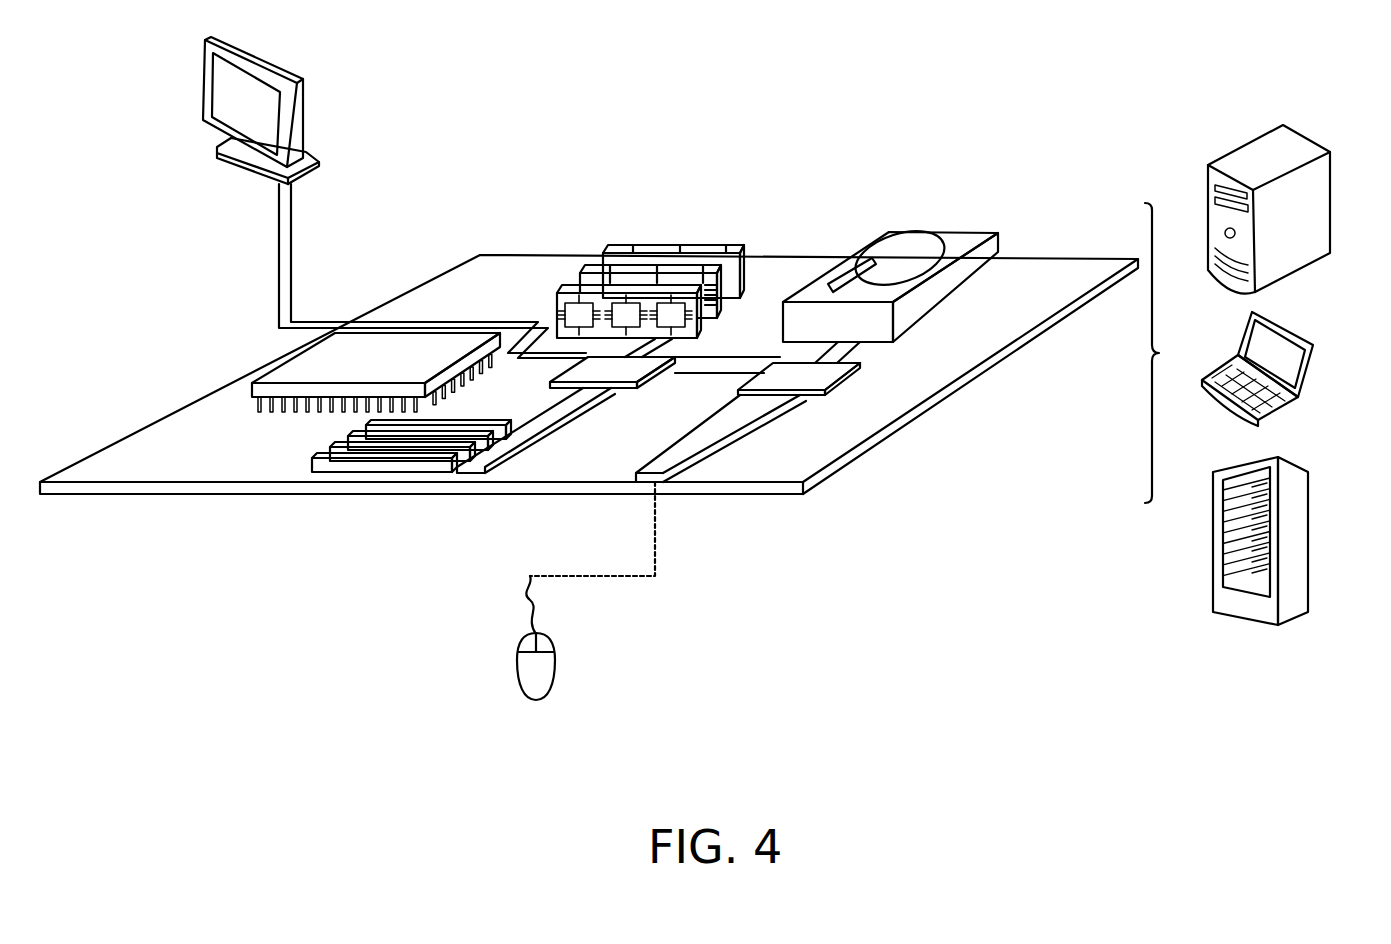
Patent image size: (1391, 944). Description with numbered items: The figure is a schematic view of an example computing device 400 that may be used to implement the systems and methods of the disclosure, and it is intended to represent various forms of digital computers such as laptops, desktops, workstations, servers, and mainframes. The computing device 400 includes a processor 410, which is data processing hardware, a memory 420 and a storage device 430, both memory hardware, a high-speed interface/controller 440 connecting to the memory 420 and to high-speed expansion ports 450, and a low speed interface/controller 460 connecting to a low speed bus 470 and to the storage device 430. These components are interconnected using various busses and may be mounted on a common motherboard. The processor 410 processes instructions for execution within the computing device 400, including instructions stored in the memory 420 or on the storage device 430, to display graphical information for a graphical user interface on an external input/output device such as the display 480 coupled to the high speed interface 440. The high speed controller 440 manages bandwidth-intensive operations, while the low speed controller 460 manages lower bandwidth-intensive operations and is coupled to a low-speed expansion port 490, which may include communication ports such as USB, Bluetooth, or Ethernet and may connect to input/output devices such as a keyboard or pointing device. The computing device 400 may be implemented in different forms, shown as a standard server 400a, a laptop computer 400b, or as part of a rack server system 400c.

The computing device 400 is at (753, 104).
The standard server 400a is at (1238, 145).
The laptop computer 400b is at (1300, 336).
The rack server system 400c is at (1302, 522).
The processor 410 is at (250, 385).
The memory 420 is at (675, 248).
The storage device 430 is at (938, 232).
The high-speed interface/controller 440 is at (620, 390).
The high-speed expansion ports 450 is at (313, 460).
The low speed interface/controller 460 is at (790, 375).
The low speed bus 470 is at (742, 433).
The display 480 is at (203, 88).
The low-speed expansion port 490 is at (668, 483).